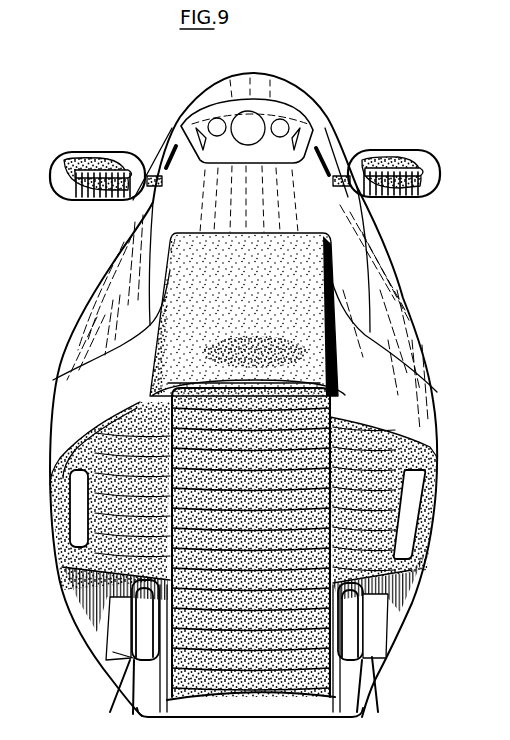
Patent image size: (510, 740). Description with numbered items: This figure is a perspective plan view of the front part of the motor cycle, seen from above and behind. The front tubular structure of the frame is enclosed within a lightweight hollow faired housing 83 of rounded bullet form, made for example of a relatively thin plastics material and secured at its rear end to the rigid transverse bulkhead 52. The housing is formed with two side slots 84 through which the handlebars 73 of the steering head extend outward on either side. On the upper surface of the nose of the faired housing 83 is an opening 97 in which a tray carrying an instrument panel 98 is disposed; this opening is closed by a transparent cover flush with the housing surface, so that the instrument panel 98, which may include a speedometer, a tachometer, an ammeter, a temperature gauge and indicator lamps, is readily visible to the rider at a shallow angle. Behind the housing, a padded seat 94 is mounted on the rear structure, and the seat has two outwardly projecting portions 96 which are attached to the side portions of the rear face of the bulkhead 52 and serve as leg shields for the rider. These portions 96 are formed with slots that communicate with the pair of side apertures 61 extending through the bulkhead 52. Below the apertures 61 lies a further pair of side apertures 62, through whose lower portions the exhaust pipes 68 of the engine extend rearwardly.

The transverse bulkhead 52 is at (397, 403).
The side apertures 61 is at (73, 504).
The further side apertures 62 is at (117, 606).
The exhaust pipes 68 is at (124, 680).
The handlebars 73 is at (337, 167).
The faired housing 83 is at (87, 306).
The side slots 84 is at (168, 150).
The padded seat 94 is at (247, 640).
The outwardly projecting portions 96 is at (100, 440).
The opening 97 is at (180, 120).
The instrument panel 98 is at (273, 110).